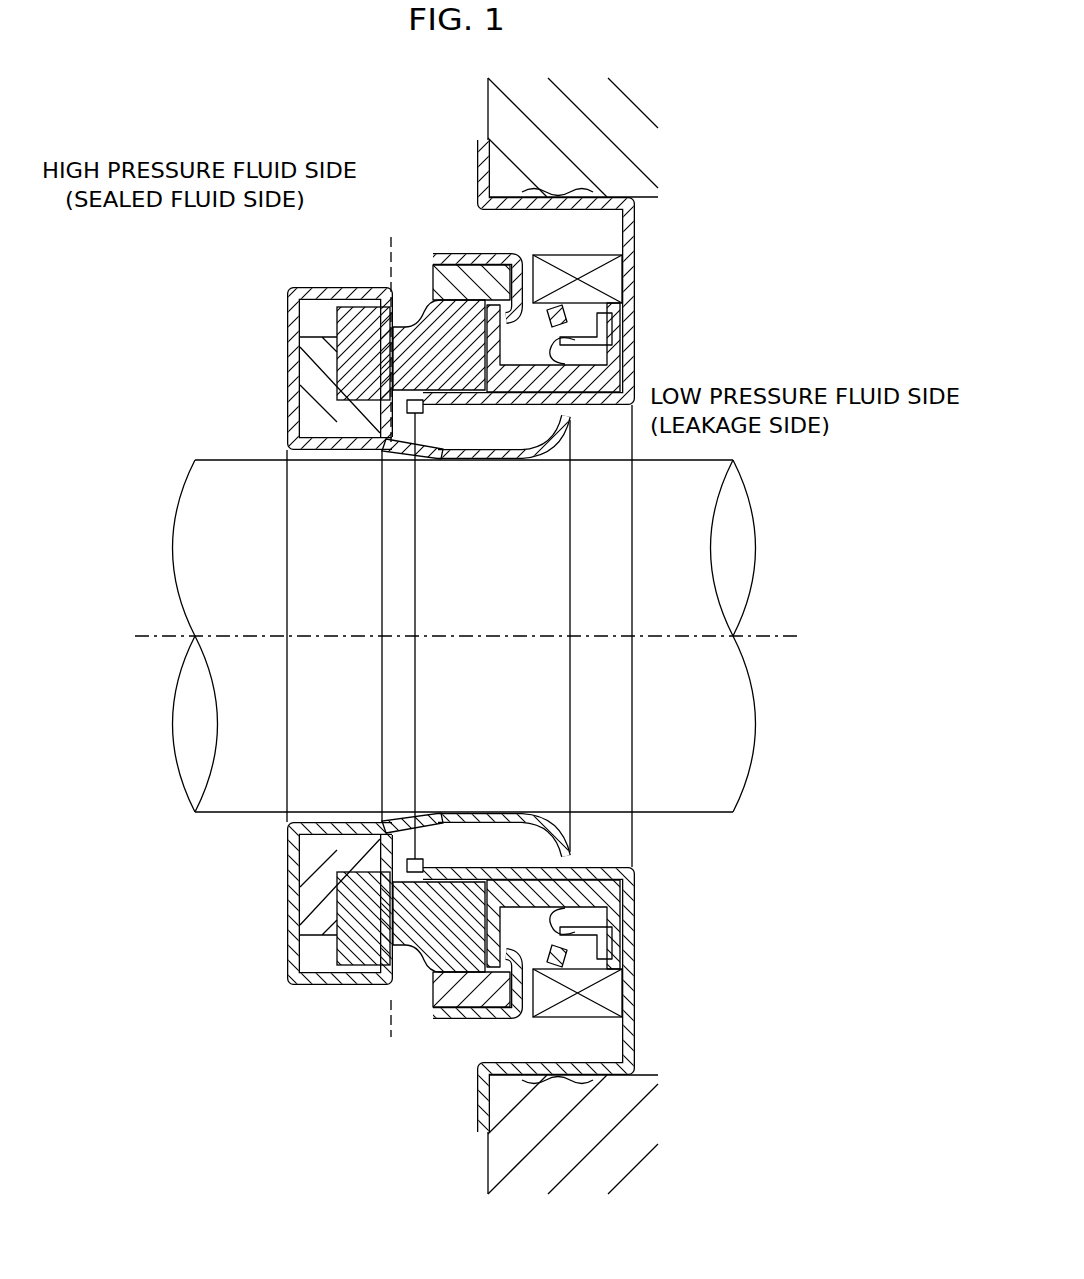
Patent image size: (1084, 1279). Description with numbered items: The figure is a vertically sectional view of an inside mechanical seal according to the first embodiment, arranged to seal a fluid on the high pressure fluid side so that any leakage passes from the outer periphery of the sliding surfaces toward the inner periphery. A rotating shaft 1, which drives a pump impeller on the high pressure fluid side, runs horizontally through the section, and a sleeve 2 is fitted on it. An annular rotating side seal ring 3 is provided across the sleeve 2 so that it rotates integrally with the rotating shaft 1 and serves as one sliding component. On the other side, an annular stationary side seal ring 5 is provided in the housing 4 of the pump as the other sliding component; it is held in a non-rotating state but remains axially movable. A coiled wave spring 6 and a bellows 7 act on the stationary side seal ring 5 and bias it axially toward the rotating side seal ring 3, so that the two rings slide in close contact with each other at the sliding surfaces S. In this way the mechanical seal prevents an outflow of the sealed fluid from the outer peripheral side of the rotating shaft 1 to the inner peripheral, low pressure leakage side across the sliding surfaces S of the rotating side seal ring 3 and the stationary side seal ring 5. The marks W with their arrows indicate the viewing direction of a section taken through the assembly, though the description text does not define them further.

The rotating shaft 1 is at (245, 815).
The sleeve 2 is at (297, 370).
The rotating side seal ring 3 is at (333, 316).
The housing 4 is at (510, 113).
The stationary side seal ring 5 is at (462, 370).
The coiled wave spring 6 is at (618, 280).
The bellows 7 is at (462, 283).
The sliding surfaces S is at (410, 378).
The section direction W is at (416, 238).